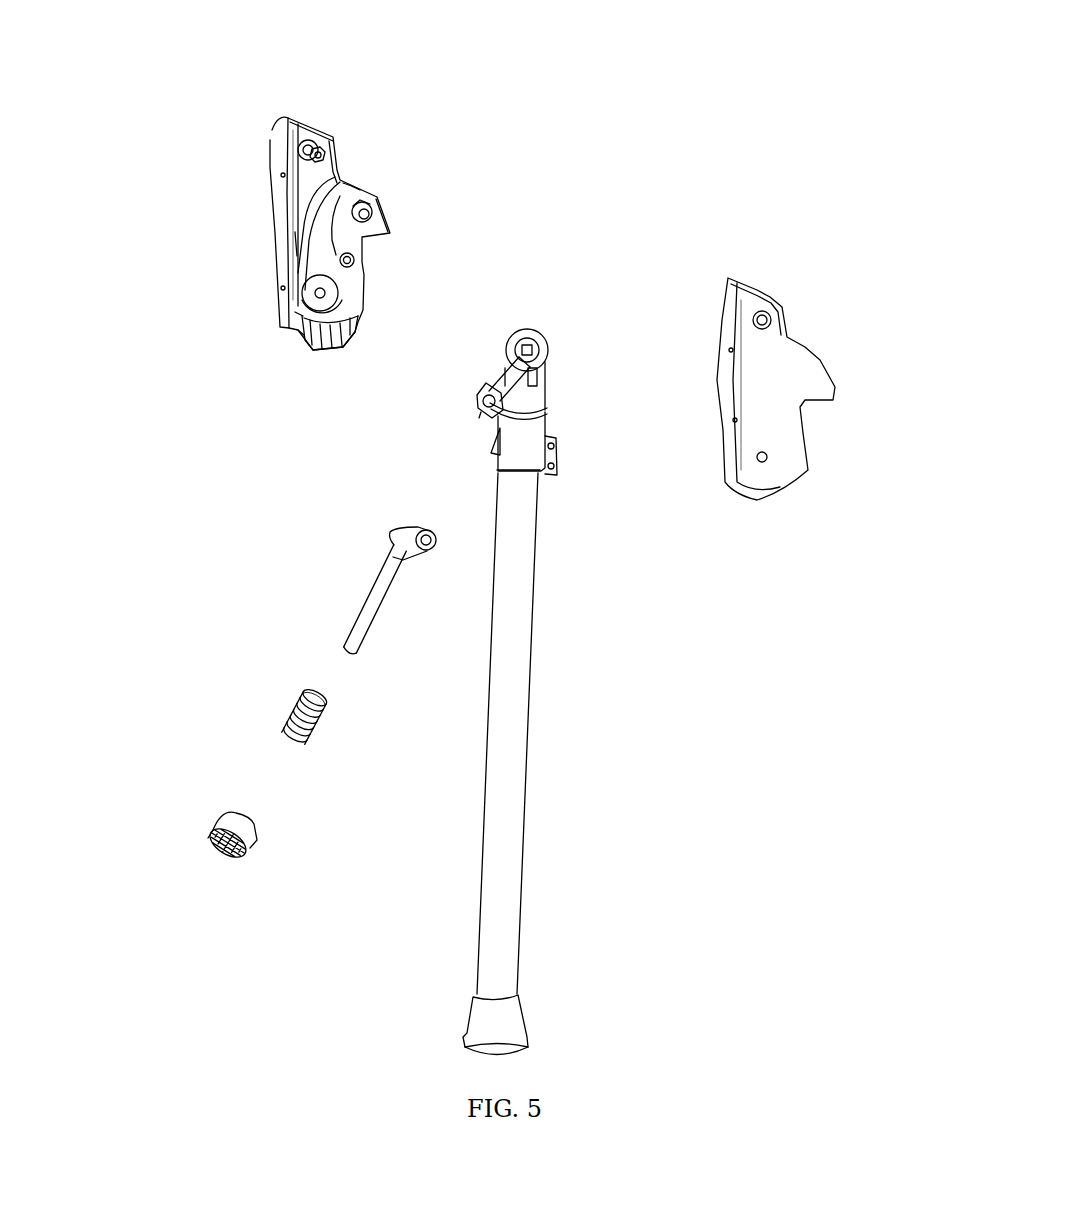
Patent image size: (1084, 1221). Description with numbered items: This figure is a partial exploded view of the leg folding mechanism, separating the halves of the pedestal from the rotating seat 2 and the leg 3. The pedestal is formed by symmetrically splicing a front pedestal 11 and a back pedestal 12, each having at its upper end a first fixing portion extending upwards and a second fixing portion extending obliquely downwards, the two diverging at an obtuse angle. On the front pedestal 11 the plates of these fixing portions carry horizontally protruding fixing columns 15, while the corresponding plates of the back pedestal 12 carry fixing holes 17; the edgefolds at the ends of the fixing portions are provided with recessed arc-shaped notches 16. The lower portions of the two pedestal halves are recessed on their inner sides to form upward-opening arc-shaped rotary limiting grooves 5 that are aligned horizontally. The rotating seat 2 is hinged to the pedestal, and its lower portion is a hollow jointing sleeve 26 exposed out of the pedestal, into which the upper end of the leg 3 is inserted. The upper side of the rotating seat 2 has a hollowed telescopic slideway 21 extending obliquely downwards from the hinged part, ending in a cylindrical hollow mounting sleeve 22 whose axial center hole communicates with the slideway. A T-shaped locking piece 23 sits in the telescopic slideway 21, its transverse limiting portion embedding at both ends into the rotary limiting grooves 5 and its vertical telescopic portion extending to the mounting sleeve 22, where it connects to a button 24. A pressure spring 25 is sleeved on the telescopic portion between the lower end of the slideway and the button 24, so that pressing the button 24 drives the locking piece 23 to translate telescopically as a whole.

The rotating seat 2 is at (530, 347).
The leg 3 is at (503, 830).
The rotary limiting groove 5 is at (303, 337).
The front pedestal 11 is at (303, 250).
The back pedestal 12 is at (780, 473).
The fixing column 15 is at (332, 135).
The arc-shaped notch 16 is at (313, 122).
The fixing hole 17 is at (766, 314).
The telescopic slideway 21 is at (497, 382).
The mounting sleeve 22 is at (478, 402).
The locking piece 23 is at (373, 595).
The button 24 is at (220, 828).
The pressure spring 25 is at (288, 713).
The jointing sleeve 26 is at (537, 437).